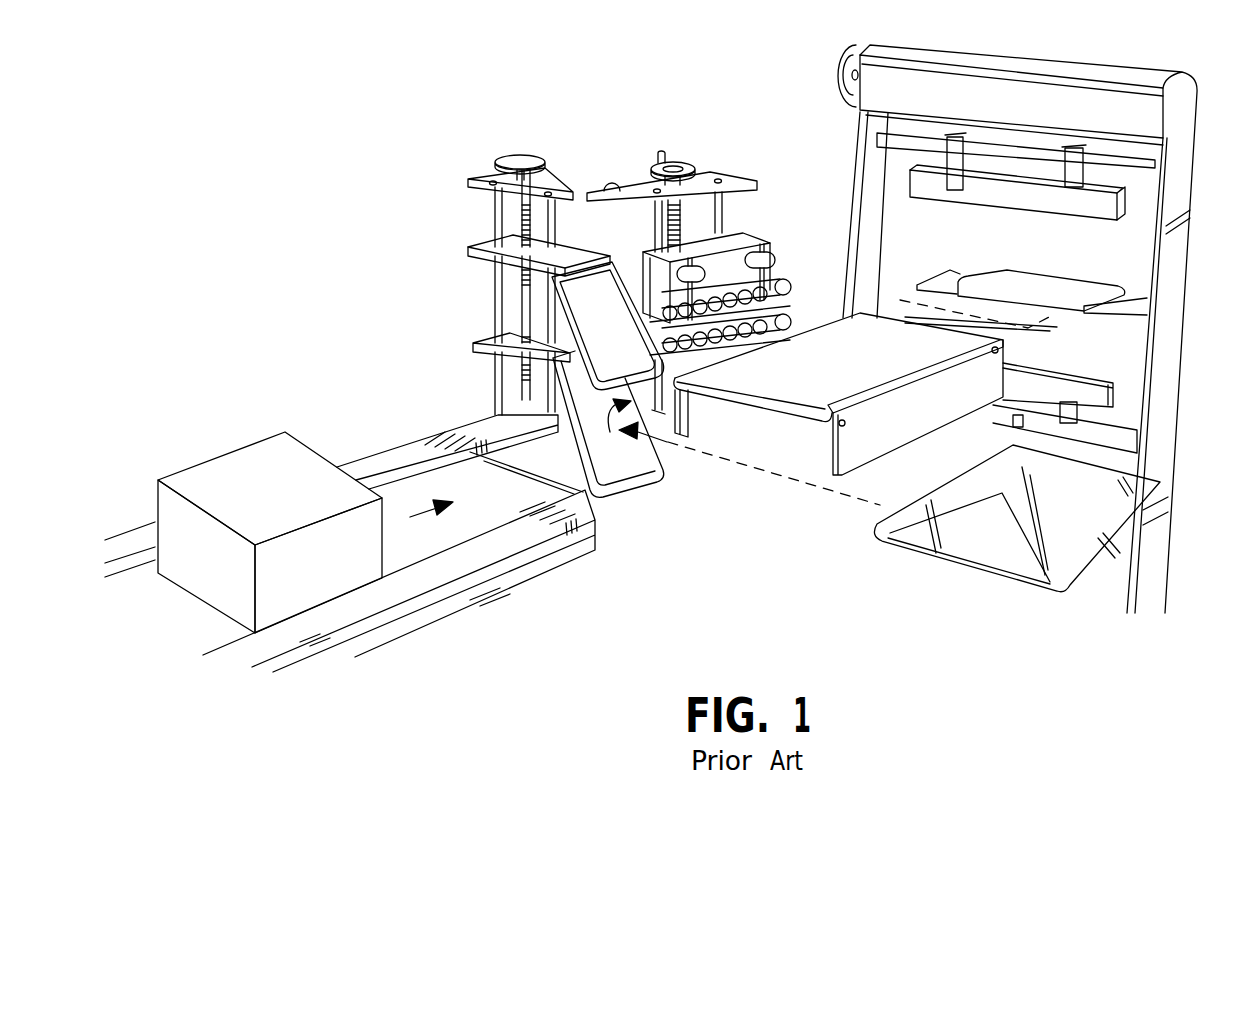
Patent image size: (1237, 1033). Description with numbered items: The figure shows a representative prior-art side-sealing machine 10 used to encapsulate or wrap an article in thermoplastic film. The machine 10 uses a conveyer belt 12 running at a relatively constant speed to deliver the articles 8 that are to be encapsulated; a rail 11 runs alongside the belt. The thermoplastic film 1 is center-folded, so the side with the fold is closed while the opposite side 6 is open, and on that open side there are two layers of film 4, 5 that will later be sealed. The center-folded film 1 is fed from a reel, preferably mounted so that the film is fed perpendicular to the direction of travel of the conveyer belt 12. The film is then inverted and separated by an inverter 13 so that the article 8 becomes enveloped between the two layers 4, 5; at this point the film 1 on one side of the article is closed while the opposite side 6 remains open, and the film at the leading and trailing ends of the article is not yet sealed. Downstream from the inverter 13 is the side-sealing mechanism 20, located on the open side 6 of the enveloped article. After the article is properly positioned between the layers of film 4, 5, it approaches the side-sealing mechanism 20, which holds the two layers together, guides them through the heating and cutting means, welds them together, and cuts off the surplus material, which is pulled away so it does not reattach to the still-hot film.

The thermoplastic film 1 is at (1007, 555).
The film layer 4 is at (1150, 483).
The film layer 5 is at (1152, 545).
The open side 6 is at (1160, 532).
The article 8 is at (244, 455).
The side-sealing machine 10 is at (440, 208).
The conveyor side rail 11 is at (375, 457).
The conveyer belt 12 is at (398, 547).
The inverter 13 is at (625, 493).
The side-sealing mechanism 20 is at (630, 160).